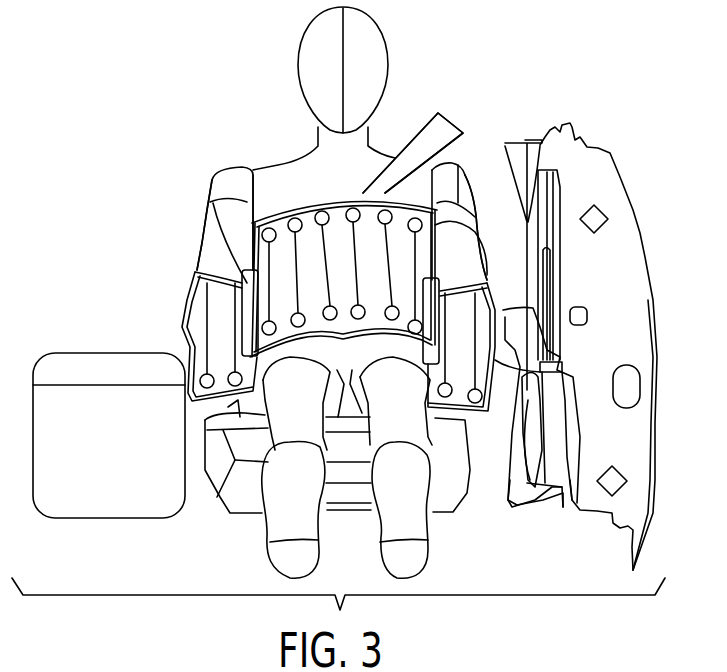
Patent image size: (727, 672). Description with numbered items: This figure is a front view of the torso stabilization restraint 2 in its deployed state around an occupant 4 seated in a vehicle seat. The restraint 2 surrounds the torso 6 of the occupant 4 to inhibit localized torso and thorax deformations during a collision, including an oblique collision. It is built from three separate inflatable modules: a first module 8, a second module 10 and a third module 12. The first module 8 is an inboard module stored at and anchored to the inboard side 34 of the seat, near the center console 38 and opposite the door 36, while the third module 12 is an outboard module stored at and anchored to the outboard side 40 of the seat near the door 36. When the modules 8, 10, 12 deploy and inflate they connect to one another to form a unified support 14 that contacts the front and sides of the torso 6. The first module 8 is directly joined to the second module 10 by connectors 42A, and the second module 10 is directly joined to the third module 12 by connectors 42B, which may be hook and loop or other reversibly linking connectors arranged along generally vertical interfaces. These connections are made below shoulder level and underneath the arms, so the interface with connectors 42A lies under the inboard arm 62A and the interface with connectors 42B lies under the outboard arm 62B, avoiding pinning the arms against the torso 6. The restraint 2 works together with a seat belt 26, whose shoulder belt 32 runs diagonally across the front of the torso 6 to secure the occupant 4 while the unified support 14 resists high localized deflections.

The torso stabilization restraint 2 is at (113, 139).
The occupant 4 is at (313, 40).
The torso 6 is at (282, 168).
The first module 8 is at (192, 318).
The second module 10 is at (338, 205).
The third module 12 is at (545, 372).
The unified support 14 is at (315, 190).
The seat belt 26 is at (449, 124).
The shoulder belt 32 is at (413, 153).
The inboard side 34 is at (207, 490).
The door 36 is at (620, 273).
The center console 38 is at (48, 488).
The outboard side 40 is at (477, 494).
The connectors 42A is at (208, 200).
The connectors 42B is at (472, 195).
The inboard arm 62A is at (210, 257).
The outboard arm 62B is at (470, 263).